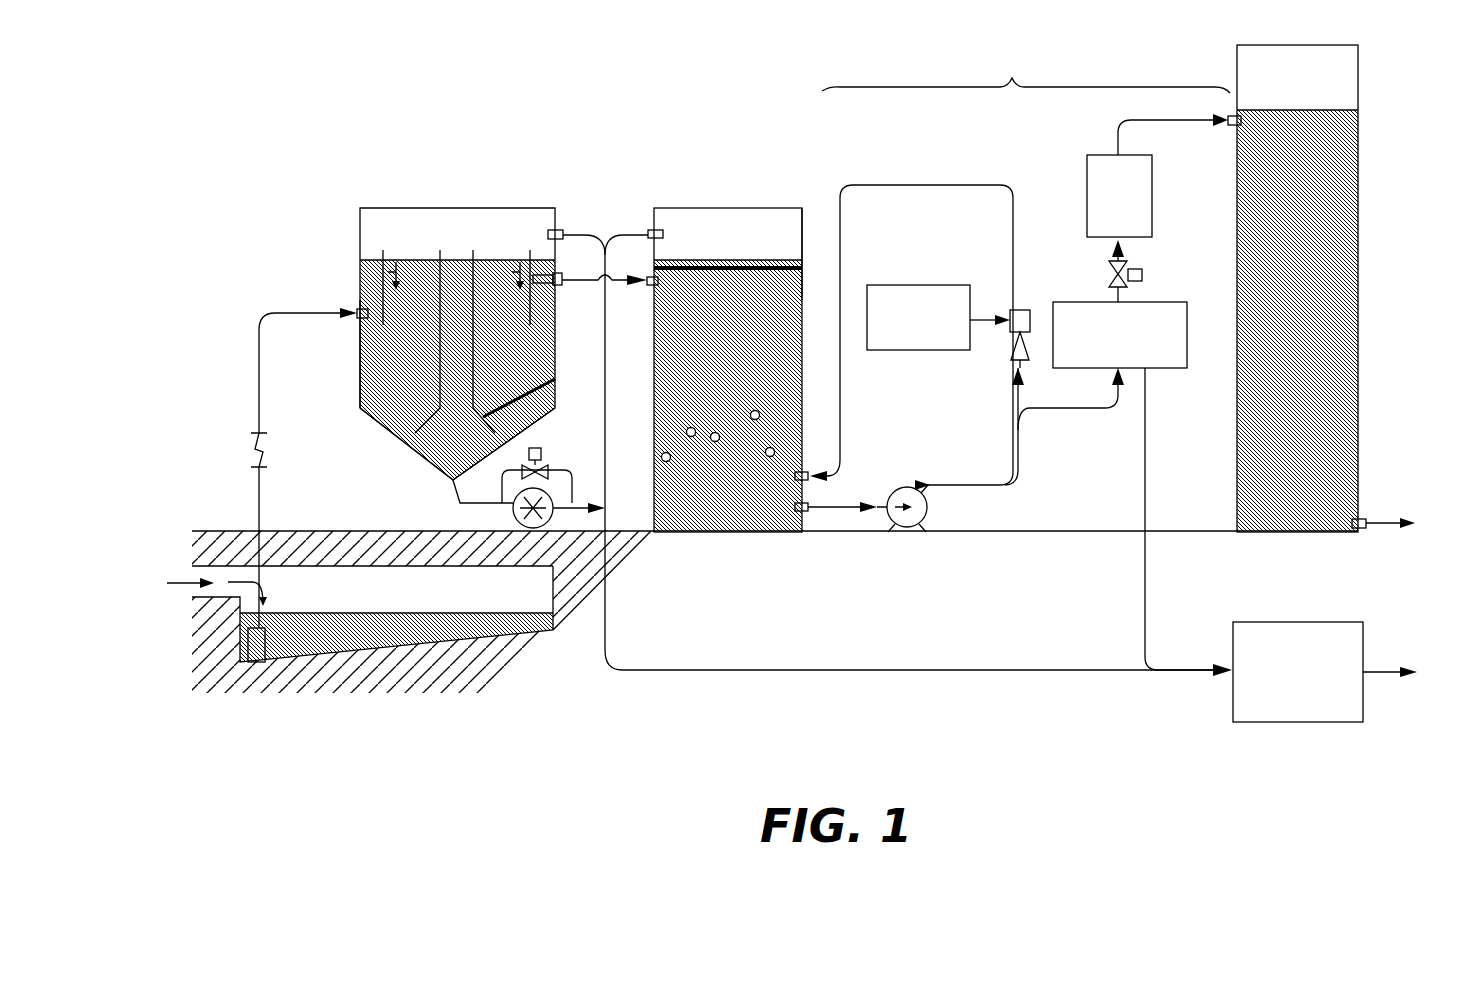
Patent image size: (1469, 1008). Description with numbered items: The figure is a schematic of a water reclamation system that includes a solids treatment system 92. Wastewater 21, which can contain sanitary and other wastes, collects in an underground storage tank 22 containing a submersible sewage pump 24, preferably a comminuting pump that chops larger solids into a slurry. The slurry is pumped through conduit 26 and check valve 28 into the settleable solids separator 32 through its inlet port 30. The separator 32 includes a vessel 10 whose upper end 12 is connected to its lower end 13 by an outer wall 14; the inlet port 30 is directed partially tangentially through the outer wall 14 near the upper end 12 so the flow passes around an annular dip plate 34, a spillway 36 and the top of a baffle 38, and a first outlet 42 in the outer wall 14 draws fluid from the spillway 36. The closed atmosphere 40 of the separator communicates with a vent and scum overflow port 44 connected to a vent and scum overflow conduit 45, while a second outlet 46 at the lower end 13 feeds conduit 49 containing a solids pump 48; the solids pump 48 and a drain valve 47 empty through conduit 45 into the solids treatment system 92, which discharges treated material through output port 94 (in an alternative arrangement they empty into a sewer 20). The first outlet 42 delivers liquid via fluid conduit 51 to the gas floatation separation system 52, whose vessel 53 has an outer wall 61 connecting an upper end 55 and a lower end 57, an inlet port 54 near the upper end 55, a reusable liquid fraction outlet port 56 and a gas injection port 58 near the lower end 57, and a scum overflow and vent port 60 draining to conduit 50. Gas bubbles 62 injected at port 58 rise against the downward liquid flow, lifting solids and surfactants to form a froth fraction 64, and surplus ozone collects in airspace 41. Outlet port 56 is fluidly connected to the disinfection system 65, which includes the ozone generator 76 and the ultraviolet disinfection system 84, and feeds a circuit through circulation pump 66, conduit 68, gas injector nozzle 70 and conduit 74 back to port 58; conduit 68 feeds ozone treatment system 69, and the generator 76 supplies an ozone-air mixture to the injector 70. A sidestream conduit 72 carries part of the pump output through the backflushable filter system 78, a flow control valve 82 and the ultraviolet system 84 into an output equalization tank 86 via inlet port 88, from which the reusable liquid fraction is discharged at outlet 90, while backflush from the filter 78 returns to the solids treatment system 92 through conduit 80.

The vessel 10 is at (353, 337).
The upper end 12 is at (353, 227).
The lower end 13 is at (423, 467).
The outer wall 14 is at (353, 390).
The sewer 20 is at (207, 580).
The wastewater 21 is at (370, 632).
The underground storage tank 22 is at (540, 637).
The submersible sewage pump 24 is at (260, 662).
The conduit 26 is at (260, 508).
The check valve 28 is at (253, 432).
The inlet port 30 is at (357, 313).
The settleable solids separator 32 is at (412, 452).
The annular dip plate 34 is at (373, 287).
The spillway 36 is at (387, 270).
The baffle 38 is at (555, 379).
The closed atmosphere 40 is at (393, 227).
The airspace 41 is at (700, 223).
The first outlet 42 is at (553, 293).
The vent and scum overflow port 44 is at (548, 233).
The vent and scum overflow conduit 45 is at (563, 230).
The second outlet 46 is at (457, 488).
The drain valve 47 is at (542, 452).
The solids pump 48 is at (567, 503).
The conduit 49 is at (460, 505).
The conduit 50 is at (622, 232).
The fluid conduit 51 is at (593, 282).
The gas floatation separation system 52 is at (790, 208).
The vessel 53 is at (775, 208).
The inlet port 54 is at (652, 286).
The upper end 55 is at (797, 227).
The reusable liquid fraction outlet port 56 is at (803, 512).
The lower end 57 is at (645, 503).
The gas injection port 58 is at (812, 477).
The scum overflow and vent port 60 is at (663, 232).
The outer wall 61 is at (795, 300).
The gas bubbles 62 is at (666, 457).
The froth fraction 64 is at (778, 258).
The disinfection system 65 is at (1026, 71).
The circulation pump 66 is at (928, 515).
The conduit 68 is at (1018, 457).
The ozone treatment system 69 is at (982, 265).
The gas injector nozzle 70 is at (1013, 352).
The sidestream conduit 72 is at (1043, 410).
The conduit 74 is at (923, 182).
The ozone generator 76 is at (903, 285).
The filter system 78 is at (1087, 302).
The conduit 80 is at (1145, 467).
The flow control valve 82 is at (1142, 275).
The ultraviolet disinfection system 84 is at (1087, 173).
The output equalization tank 86 is at (1252, 537).
The inlet port 88 is at (1232, 116).
The outlet 90 is at (1363, 530).
The solids treatment system 92 is at (1302, 622).
The output port 94 is at (1393, 670).